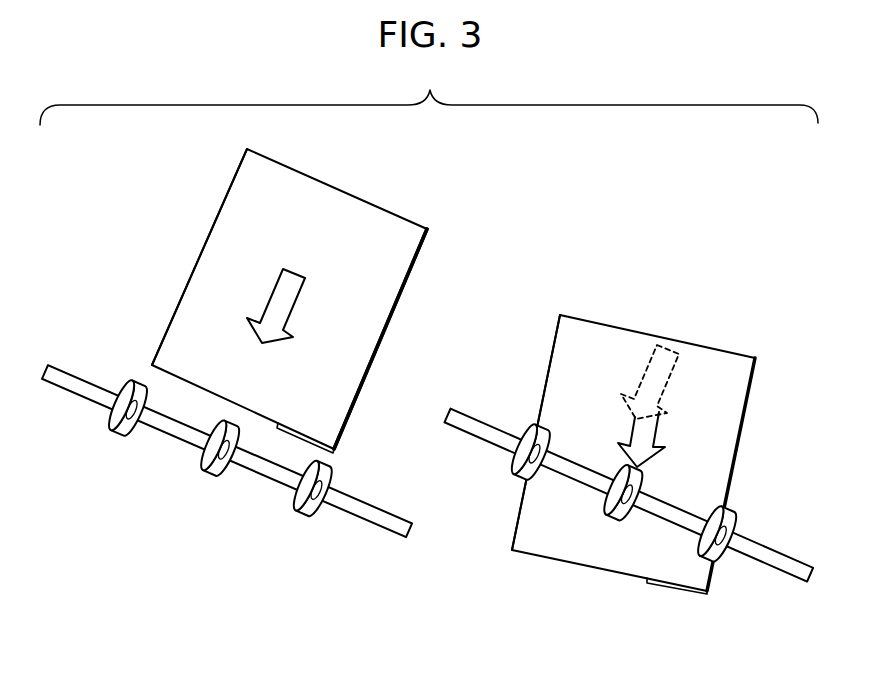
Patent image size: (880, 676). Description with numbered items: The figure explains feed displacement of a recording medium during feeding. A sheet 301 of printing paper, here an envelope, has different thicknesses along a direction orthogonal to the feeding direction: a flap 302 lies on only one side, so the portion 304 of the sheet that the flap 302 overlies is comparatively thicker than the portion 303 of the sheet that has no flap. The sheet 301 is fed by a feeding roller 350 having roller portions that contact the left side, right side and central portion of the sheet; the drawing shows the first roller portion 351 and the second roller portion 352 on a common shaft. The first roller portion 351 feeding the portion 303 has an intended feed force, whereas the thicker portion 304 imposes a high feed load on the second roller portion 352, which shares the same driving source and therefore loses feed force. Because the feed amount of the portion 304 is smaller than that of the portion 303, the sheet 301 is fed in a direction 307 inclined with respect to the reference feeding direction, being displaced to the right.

The sheet of printing paper 301 is at (367, 233).
The flap 302 is at (320, 440).
The portion of the sheet of printing paper 303 is at (180, 353).
The portion of the sheet of printing paper 304 is at (365, 333).
The direction 307 is at (667, 352).
The feeding roller 350 is at (168, 427).
The first roller portion 351 is at (515, 478).
The second roller portion 352 is at (720, 555).